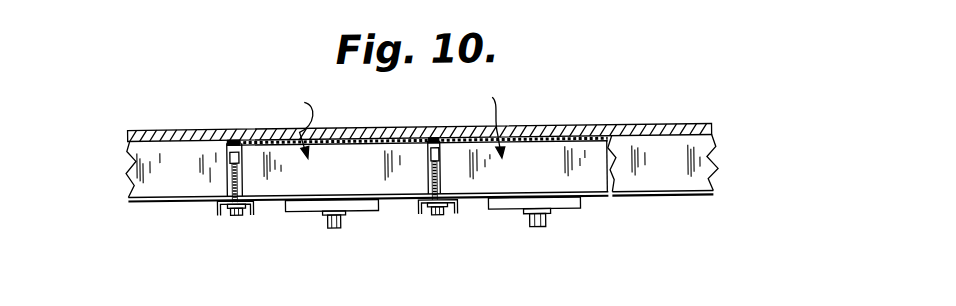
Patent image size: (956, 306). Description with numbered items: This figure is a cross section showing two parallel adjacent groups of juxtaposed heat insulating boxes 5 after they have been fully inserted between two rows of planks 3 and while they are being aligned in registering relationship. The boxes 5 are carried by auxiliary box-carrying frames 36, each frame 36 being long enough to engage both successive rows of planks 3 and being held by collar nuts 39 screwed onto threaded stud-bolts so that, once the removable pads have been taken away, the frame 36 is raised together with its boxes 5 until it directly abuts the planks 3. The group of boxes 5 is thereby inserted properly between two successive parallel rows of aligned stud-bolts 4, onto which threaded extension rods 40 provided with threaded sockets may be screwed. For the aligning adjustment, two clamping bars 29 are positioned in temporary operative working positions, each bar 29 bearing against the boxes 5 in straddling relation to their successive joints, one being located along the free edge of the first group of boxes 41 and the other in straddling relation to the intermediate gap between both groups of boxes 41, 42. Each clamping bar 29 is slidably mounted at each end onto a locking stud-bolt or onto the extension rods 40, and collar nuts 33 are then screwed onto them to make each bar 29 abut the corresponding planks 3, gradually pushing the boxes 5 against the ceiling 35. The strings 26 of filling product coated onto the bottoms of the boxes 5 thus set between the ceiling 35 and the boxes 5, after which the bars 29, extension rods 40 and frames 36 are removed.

The plank 3 is at (187, 150).
The stud-bolt 4 is at (227, 128).
The heat insulating box 5 is at (436, 168).
The longitudinal string 26 is at (376, 127).
The clamping bar 29 is at (217, 212).
The collar nut 33 is at (236, 215).
The ceiling 35 is at (538, 127).
The auxiliary box-carrying frame 36 is at (305, 210).
The collar nut 39 is at (338, 228).
The threaded extension rod 40 is at (229, 171).
The first group of boxes 41 is at (298, 124).
The second group of boxes 42 is at (491, 118).